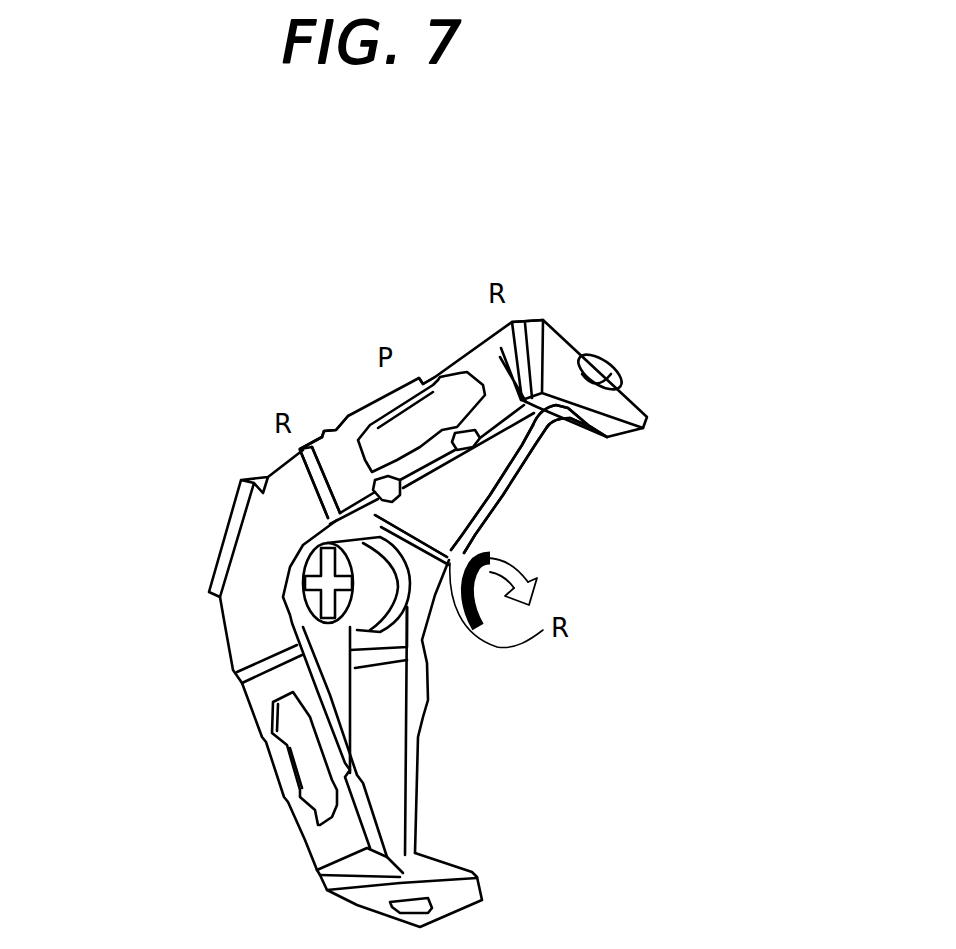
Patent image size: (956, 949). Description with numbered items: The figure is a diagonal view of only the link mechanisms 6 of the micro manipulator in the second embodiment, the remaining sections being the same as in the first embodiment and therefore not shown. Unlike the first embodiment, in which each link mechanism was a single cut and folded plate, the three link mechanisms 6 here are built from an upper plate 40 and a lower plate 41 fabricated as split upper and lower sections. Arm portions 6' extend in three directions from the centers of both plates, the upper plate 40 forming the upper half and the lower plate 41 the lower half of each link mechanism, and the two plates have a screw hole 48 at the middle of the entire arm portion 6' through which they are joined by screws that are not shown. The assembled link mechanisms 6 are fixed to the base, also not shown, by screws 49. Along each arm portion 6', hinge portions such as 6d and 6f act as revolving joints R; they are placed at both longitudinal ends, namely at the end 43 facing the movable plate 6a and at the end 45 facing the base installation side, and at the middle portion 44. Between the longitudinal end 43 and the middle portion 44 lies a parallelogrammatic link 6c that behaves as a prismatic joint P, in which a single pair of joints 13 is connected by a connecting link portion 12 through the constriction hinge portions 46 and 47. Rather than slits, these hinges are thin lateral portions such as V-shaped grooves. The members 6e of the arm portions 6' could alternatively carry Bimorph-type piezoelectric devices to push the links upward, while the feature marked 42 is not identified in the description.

The link mechanism 6 is at (368, 605).
The movable plate 6a is at (262, 533).
The parallelogrammatic link 6c is at (465, 486).
The hinge portion 6d is at (375, 351).
The member 6e is at (498, 455).
The hinge portion 6f is at (499, 489).
The arm portion 6' is at (250, 774).
The connecting link portion 12 is at (363, 417).
The joint 13 is at (333, 431).
The upper plate 40 is at (225, 639).
The lower plate 41 is at (423, 752).
The slot 42 is at (417, 420).
The longitudinal end 43 is at (300, 449).
The middle portion 44 is at (512, 322).
The longitudinal end 45 is at (470, 537).
The hinge portion 46 is at (322, 437).
The hinge portion 47 is at (437, 372).
The screw hole 48 is at (598, 368).
The screw 49 is at (303, 585).